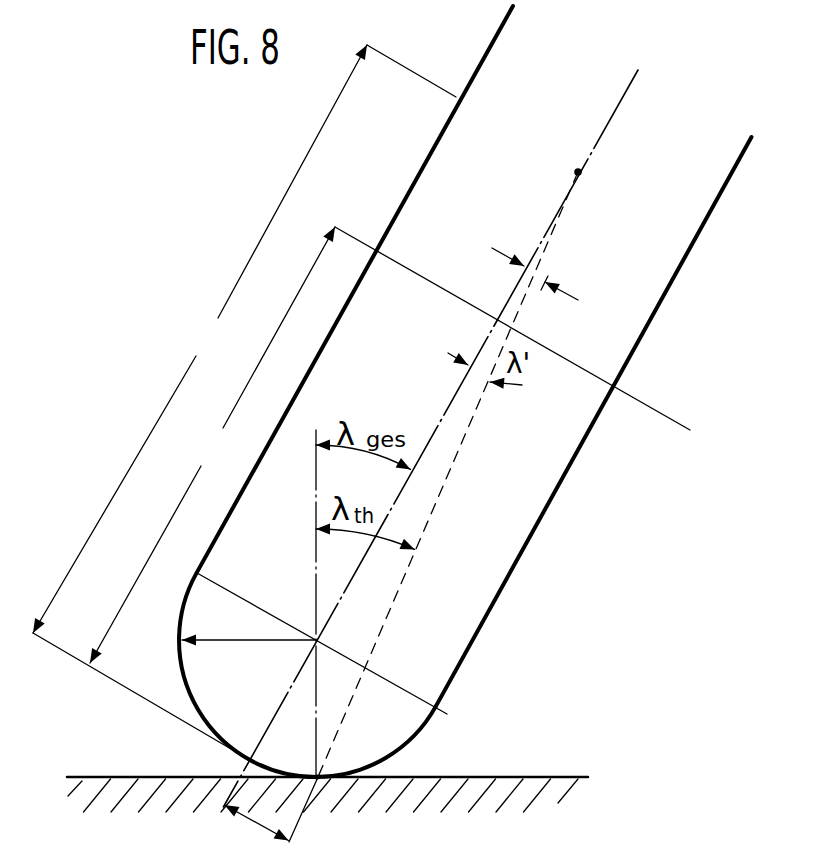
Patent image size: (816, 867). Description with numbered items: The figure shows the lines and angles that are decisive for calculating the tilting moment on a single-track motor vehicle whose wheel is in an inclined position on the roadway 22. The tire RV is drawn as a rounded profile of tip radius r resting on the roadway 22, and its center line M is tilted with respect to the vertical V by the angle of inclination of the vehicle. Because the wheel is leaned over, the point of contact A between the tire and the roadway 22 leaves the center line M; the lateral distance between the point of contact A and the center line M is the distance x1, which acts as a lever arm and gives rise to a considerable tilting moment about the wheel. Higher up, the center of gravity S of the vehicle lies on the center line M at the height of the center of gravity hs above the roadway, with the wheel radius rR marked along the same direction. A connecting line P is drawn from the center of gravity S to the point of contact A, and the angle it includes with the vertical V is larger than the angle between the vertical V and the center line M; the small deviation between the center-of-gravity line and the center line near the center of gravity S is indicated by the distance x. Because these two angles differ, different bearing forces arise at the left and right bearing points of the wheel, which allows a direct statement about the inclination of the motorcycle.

The roadway 22 is at (541, 778).
The tire RV is at (522, 531).
The center line M is at (432, 430).
The center of gravity S is at (588, 173).
The connecting line P is at (388, 612).
The vertical V is at (316, 578).
The point of contact A is at (321, 800).
The height of the center of gravity hs is at (244, 404).
The wheel radius rR is at (390, 445).
The tip radius r is at (249, 628).
The distance of the wheel load point of attack at the front axis x is at (535, 274).
The distance of point of contact A from the center line M x1 is at (257, 814).